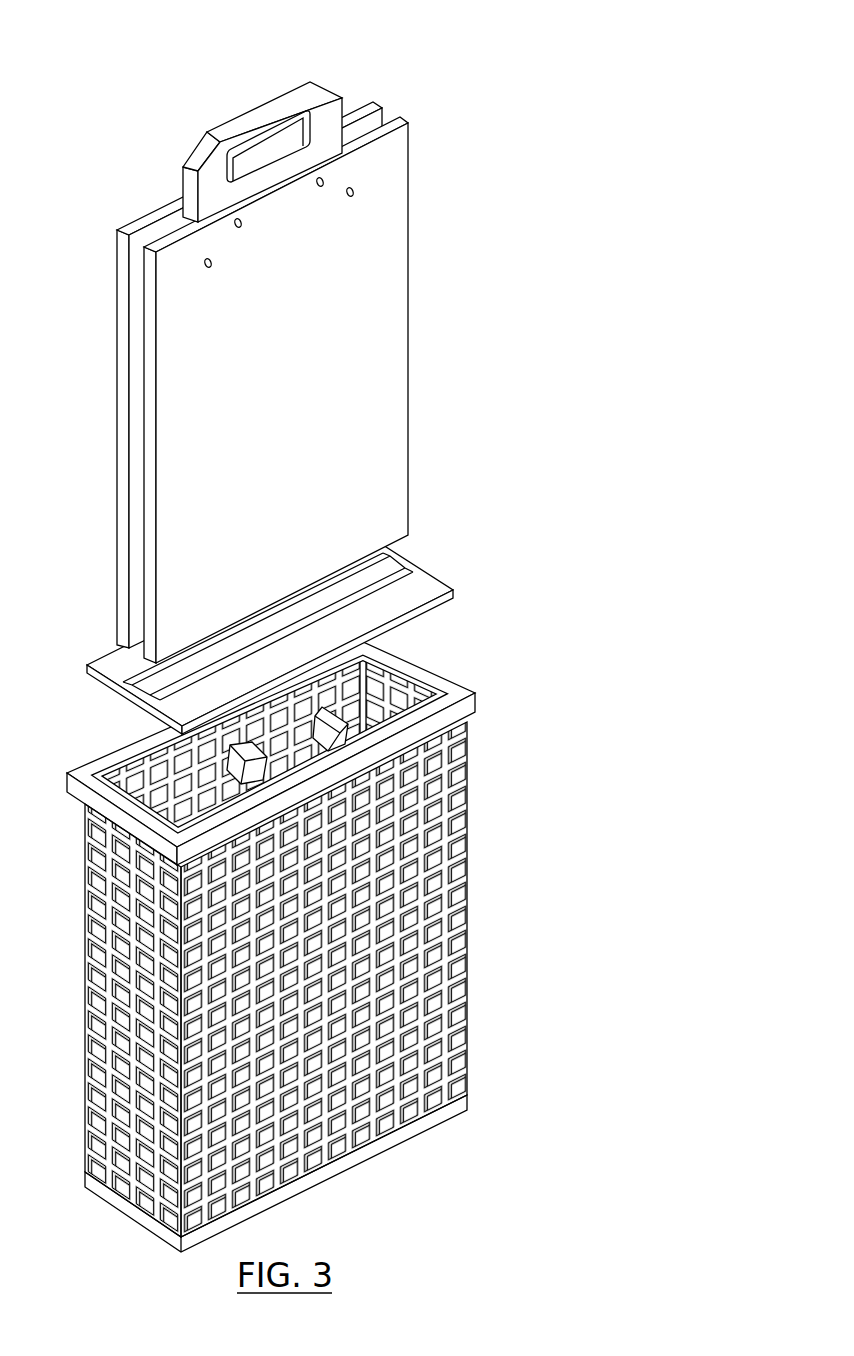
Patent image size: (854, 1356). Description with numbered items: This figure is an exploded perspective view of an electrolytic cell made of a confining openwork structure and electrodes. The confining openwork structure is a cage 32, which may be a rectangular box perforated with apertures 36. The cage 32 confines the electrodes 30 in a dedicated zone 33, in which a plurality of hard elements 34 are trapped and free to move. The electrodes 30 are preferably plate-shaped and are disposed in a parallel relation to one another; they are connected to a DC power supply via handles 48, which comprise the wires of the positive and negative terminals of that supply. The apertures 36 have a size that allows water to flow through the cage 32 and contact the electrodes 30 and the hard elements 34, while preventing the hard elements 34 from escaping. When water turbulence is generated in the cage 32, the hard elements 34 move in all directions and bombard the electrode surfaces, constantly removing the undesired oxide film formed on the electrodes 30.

The electrodes 30 is at (296, 370).
The cage 32 is at (267, 944).
The dedicated zone 33 is at (373, 692).
The hard elements 34 is at (433, 1030).
The apertures 36 is at (188, 770).
The handles 48 is at (327, 97).